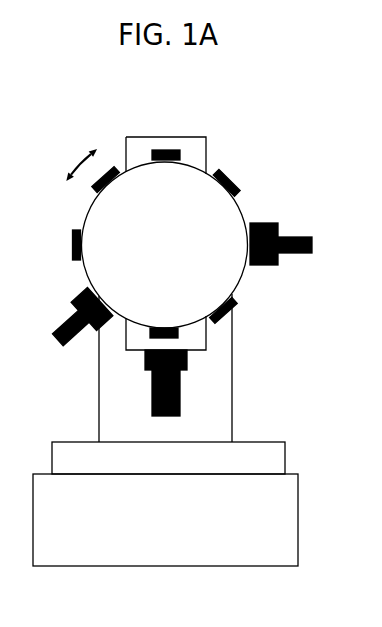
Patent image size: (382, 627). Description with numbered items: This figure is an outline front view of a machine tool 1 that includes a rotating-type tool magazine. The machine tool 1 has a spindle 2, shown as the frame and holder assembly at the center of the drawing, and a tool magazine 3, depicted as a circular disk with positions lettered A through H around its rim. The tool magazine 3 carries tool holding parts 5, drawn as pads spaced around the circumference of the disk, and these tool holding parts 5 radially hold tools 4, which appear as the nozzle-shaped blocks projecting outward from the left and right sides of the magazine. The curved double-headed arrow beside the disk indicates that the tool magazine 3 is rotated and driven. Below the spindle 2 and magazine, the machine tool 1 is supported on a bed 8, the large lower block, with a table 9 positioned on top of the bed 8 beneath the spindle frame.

The machine tool 1 is at (221, 140).
The spindle 2 is at (199, 347).
The tool magazine 3 is at (103, 216).
The tool 4 is at (291, 233).
The tool holding part 5 is at (232, 176).
The bed 8 is at (290, 527).
The table 9 is at (252, 448).